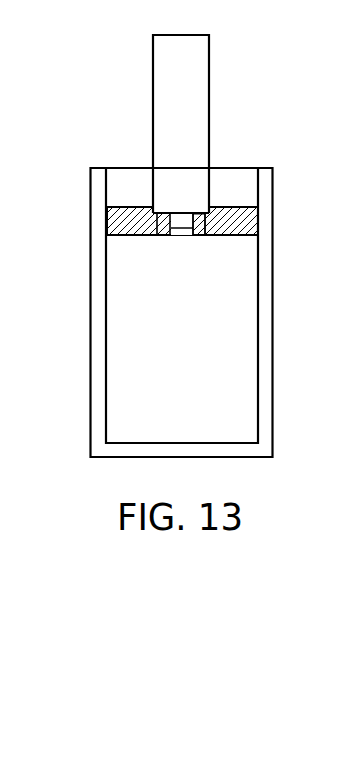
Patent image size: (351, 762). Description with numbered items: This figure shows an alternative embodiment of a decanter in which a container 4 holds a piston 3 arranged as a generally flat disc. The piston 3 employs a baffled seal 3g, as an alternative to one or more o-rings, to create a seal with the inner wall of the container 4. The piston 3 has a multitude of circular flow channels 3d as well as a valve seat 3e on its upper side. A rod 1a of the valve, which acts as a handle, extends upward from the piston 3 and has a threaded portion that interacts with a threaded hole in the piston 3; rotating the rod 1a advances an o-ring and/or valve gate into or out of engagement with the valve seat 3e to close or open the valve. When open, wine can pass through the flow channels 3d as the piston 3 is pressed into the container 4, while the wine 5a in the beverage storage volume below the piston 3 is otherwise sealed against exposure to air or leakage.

The rod 1a is at (162, 118).
The piston 3 is at (227, 222).
The circular flow channels 3d is at (201, 222).
The valve seat 3e is at (153, 197).
The baffled seal 3g is at (107, 212).
The container 4 is at (91, 287).
The wine 5a is at (107, 338).